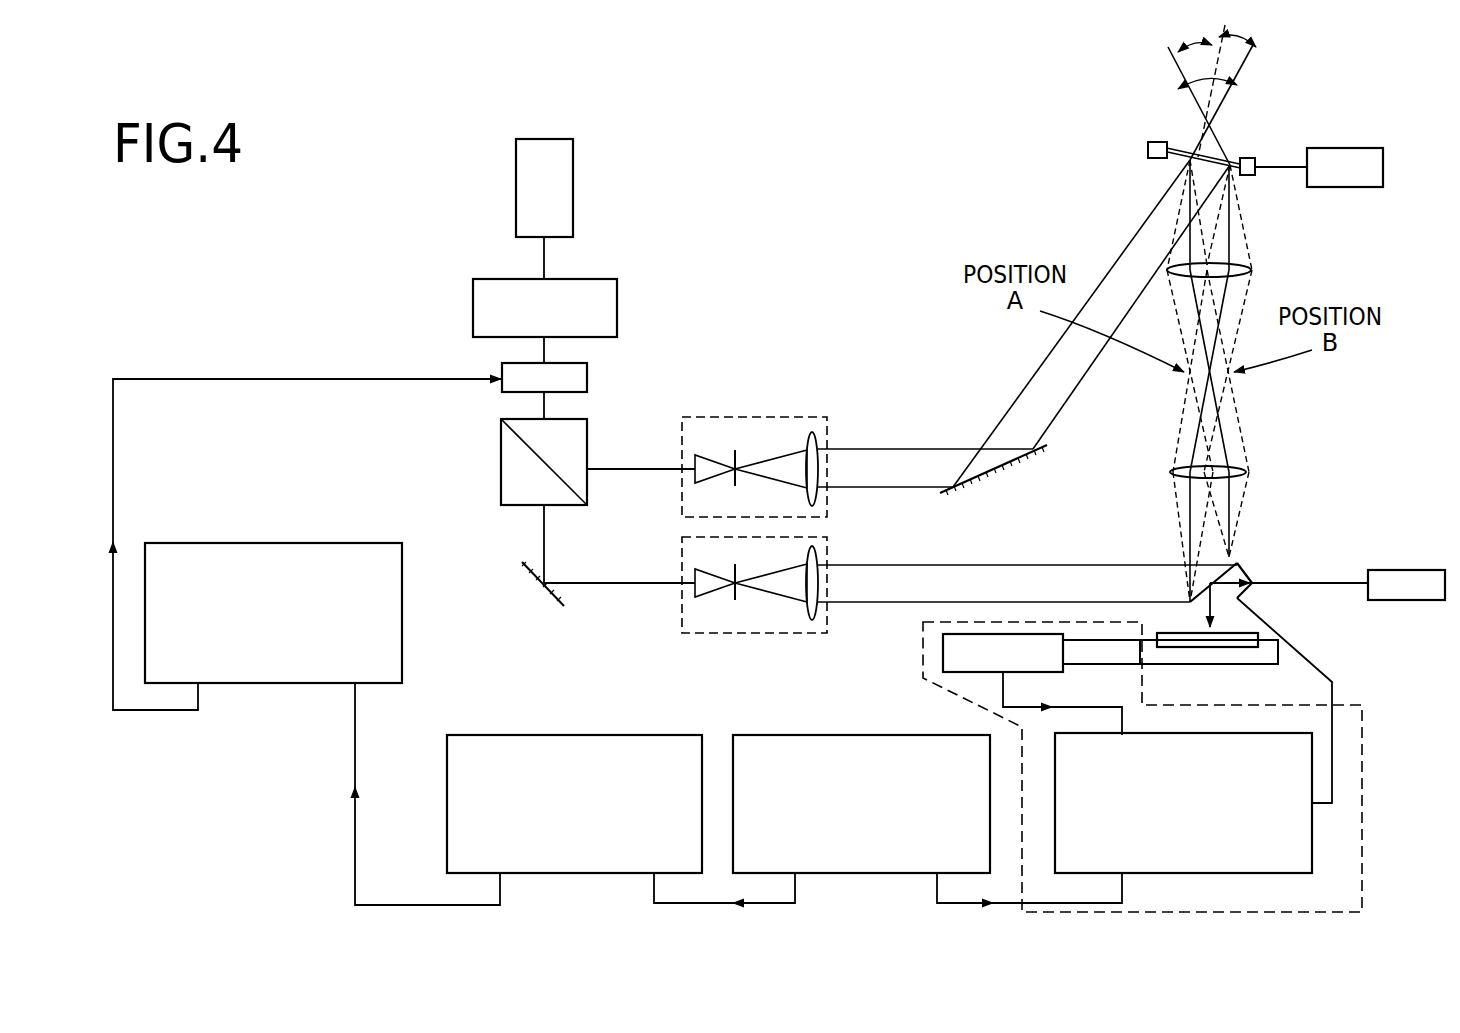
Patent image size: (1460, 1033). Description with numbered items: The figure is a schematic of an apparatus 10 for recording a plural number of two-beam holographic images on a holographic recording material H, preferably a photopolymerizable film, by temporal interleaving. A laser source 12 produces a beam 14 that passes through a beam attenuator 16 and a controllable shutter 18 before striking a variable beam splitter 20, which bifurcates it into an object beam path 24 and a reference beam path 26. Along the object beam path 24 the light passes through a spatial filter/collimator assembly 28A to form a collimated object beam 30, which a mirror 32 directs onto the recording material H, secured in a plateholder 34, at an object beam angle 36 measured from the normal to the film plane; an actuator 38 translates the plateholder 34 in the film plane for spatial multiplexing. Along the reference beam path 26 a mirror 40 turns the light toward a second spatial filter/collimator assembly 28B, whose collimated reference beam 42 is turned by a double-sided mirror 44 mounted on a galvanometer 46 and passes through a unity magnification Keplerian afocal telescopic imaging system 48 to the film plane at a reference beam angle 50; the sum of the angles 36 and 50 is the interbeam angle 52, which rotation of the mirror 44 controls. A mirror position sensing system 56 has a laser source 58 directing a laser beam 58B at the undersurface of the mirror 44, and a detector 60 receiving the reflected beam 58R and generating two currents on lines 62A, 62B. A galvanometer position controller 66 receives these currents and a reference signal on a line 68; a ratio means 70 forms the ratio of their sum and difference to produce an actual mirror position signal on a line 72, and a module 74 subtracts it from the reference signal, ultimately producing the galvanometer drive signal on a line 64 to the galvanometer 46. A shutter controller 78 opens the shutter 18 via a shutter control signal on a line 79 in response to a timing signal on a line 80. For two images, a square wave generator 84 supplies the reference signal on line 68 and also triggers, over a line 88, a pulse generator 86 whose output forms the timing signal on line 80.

The apparatus 10 is at (705, 131).
The laser source 12 is at (558, 200).
The beam 14 is at (548, 246).
The beam attenuator 16 is at (558, 320).
The controllable shutter 18 is at (569, 376).
The variable beam splitter 20 is at (501, 462).
The object beam path 24 is at (620, 468).
The reference beam path 26 is at (640, 584).
The spatial filter/collimator assembly 28A is at (785, 417).
The spatial filter/collimator assembly 28B is at (722, 634).
The collimated object beam 30 is at (1010, 413).
The mirror 32 is at (987, 470).
The plateholder 34 is at (1149, 151).
The object beam angle 36 is at (1252, 40).
The actuator 38 is at (1362, 180).
The mirror 40 is at (537, 592).
The collimated reference beam 42 is at (880, 565).
The double-sided mirror 44 is at (1238, 561).
The galvanometer 46 is at (1246, 577).
The Keplerian afocal telescopic imaging system 48 is at (1278, 425).
The reference beam angle 50 is at (1178, 50).
The interbeam angle 52 is at (1178, 84).
The mirror position sensing system 56 is at (1366, 638).
The laser source 58 is at (1408, 571).
The laser beam 58B is at (1332, 582).
The reflected beam 58R is at (1190, 611).
The detector 60 is at (1238, 636).
The line 62A is at (1235, 666).
The line 62B is at (1120, 642).
The line 64 is at (1335, 676).
The galvanometer position controller 66 is at (1362, 762).
The line 68 is at (937, 893).
The ratio forming means 70 is at (1020, 668).
The line 72 is at (1003, 695).
The module 74 is at (1233, 874).
The shutter controller 78 is at (273, 543).
The line 79 is at (114, 481).
The line 80 is at (353, 836).
The square wave generator 84 is at (882, 734).
The pulse generator 86 is at (580, 735).
The line 88 is at (796, 886).
The holographic recording material H is at (1178, 164).